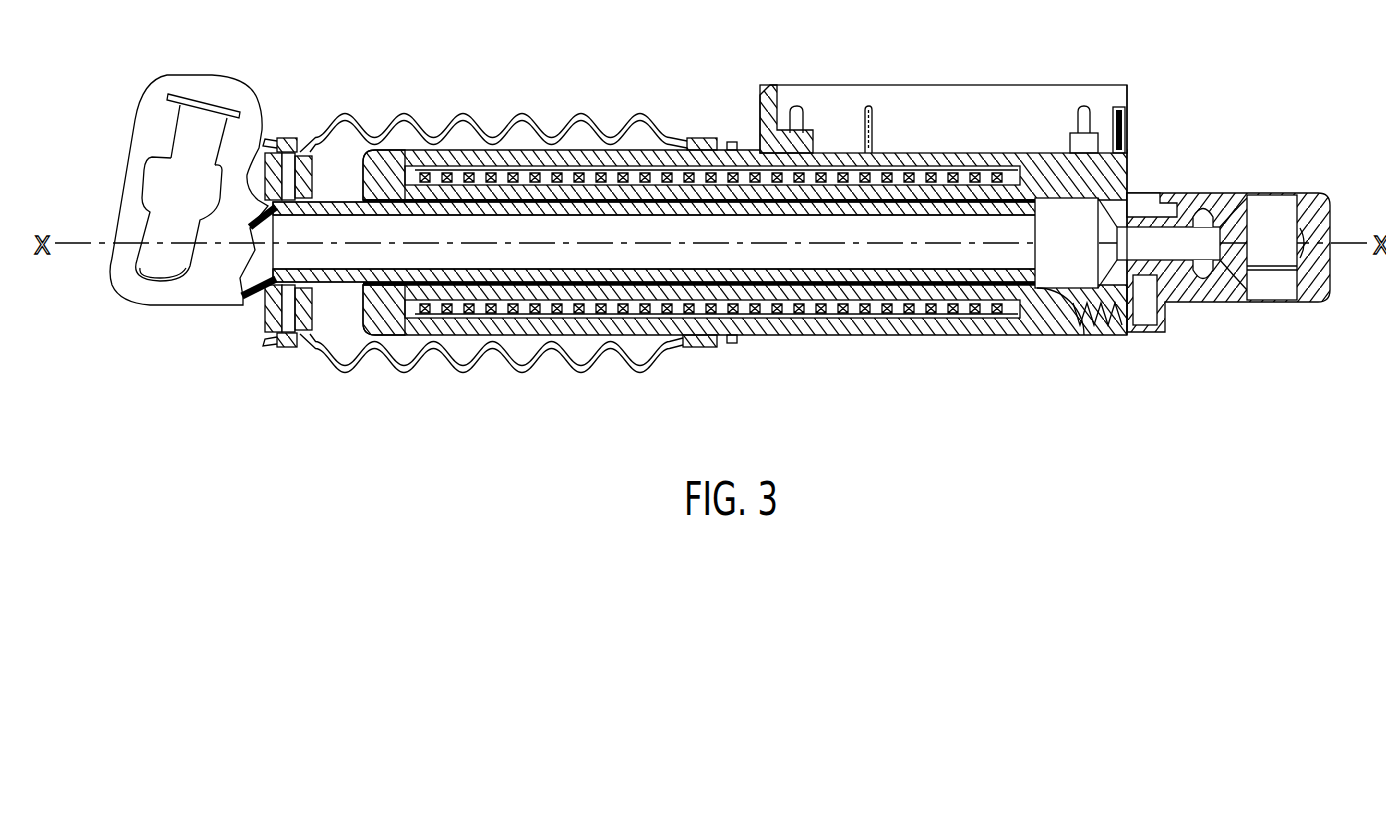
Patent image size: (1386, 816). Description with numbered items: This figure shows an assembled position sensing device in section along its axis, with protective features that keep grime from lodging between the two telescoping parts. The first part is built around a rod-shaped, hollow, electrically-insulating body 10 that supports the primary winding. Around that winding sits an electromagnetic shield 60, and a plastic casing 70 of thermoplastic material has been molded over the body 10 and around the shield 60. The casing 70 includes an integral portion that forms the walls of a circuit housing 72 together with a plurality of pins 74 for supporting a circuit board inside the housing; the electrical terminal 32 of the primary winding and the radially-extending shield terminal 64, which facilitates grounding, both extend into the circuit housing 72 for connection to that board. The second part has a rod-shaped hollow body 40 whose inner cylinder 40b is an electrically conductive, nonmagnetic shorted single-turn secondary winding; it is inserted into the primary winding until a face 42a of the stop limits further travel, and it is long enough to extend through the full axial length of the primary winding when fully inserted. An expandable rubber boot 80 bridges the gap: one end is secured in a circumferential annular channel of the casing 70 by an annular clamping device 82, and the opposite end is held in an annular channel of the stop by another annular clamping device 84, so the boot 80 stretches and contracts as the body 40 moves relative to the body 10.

The hollow body 10 is at (682, 303).
The electrical terminal 32 is at (1127, 120).
The hollow body 40 is at (655, 157).
The inner cylinder 40b is at (1084, 318).
The face 42a is at (328, 340).
The electromagnetic shield 60 is at (829, 323).
The shield terminal 64 is at (872, 122).
The plastic casing 70 is at (409, 182).
The circuit housing 72 is at (941, 82).
The pins 74 is at (798, 107).
The expandable rubber boot 80 is at (493, 274).
The annular clamping device 82 is at (703, 138).
The annular clamping device 84 is at (285, 348).